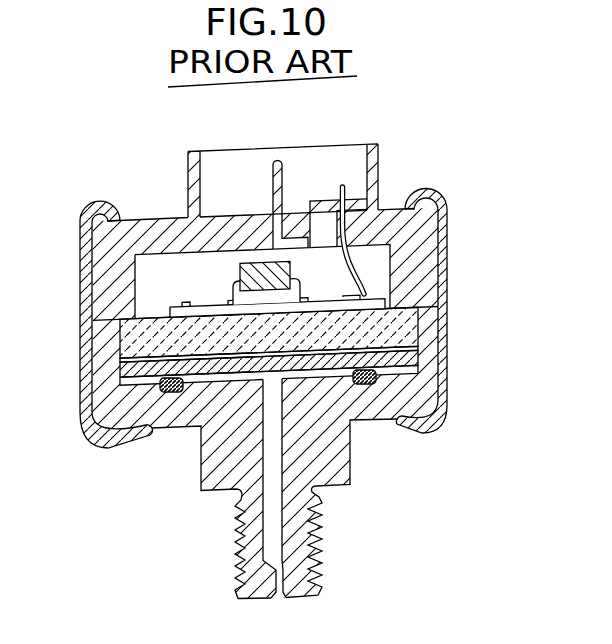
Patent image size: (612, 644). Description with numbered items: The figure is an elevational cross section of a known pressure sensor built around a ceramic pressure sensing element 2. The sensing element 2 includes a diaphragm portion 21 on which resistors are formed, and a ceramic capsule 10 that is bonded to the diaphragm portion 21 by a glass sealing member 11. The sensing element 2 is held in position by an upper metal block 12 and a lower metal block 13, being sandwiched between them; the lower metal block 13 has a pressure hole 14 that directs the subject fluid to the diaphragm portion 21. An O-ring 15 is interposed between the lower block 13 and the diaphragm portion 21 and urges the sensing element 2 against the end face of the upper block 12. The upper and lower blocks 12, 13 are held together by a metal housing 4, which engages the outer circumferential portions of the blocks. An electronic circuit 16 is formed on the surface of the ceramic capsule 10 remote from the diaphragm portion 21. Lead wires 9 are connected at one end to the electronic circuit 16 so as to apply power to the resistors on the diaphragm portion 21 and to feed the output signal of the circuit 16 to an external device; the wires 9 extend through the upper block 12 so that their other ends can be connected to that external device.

The ceramic pressure sensing element 2 is at (383, 297).
The metal housing 4 is at (82, 230).
The lead wires 9 is at (355, 272).
The ceramic capsule 10 is at (413, 322).
The glass sealing member 11 is at (120, 364).
The upper metal block 12 is at (173, 240).
The lower metal block 13 is at (420, 391).
The pressure hole 14 is at (272, 430).
The O-ring 15 is at (172, 393).
The electronic circuit 16 is at (217, 303).
The diaphragm portion 21 is at (413, 357).